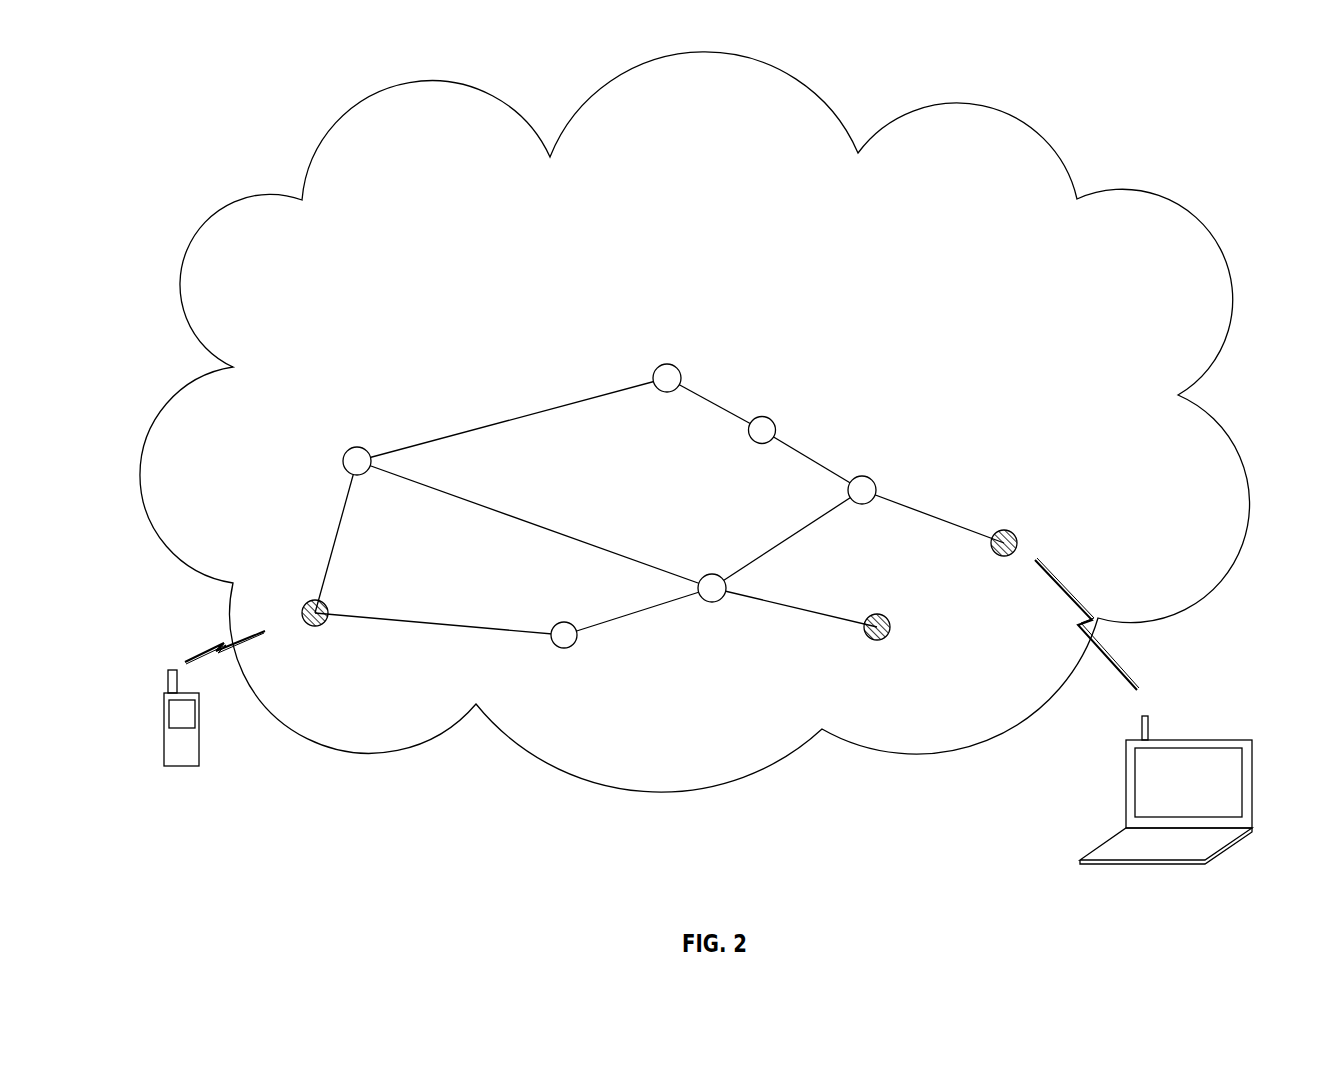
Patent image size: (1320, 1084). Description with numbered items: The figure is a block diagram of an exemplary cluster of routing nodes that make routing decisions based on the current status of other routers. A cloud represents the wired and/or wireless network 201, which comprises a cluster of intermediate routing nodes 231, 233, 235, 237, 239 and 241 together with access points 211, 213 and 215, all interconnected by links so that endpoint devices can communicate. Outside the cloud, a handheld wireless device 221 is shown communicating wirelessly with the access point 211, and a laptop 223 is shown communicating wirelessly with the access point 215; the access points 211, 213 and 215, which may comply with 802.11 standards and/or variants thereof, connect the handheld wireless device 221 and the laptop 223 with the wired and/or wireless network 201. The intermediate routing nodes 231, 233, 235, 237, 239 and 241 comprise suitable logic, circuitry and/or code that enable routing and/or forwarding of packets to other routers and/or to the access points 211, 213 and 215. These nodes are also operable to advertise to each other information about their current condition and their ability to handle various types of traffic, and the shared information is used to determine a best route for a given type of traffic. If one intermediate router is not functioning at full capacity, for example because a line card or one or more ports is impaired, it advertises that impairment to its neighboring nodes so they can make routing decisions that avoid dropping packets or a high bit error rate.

The wired and/or wireless network 201 is at (678, 246).
The access point 211 is at (326, 600).
The access point 213 is at (875, 613).
The access point 215 is at (1003, 529).
The handheld wireless device 221 is at (182, 767).
The laptop 223 is at (1118, 845).
The intermediate routing node 231 is at (360, 447).
The intermediate routing node 233 is at (668, 364).
The intermediate routing node 235 is at (773, 422).
The intermediate routing node 237 is at (708, 604).
The intermediate routing node 239 is at (862, 475).
The intermediate routing node 241 is at (563, 649).